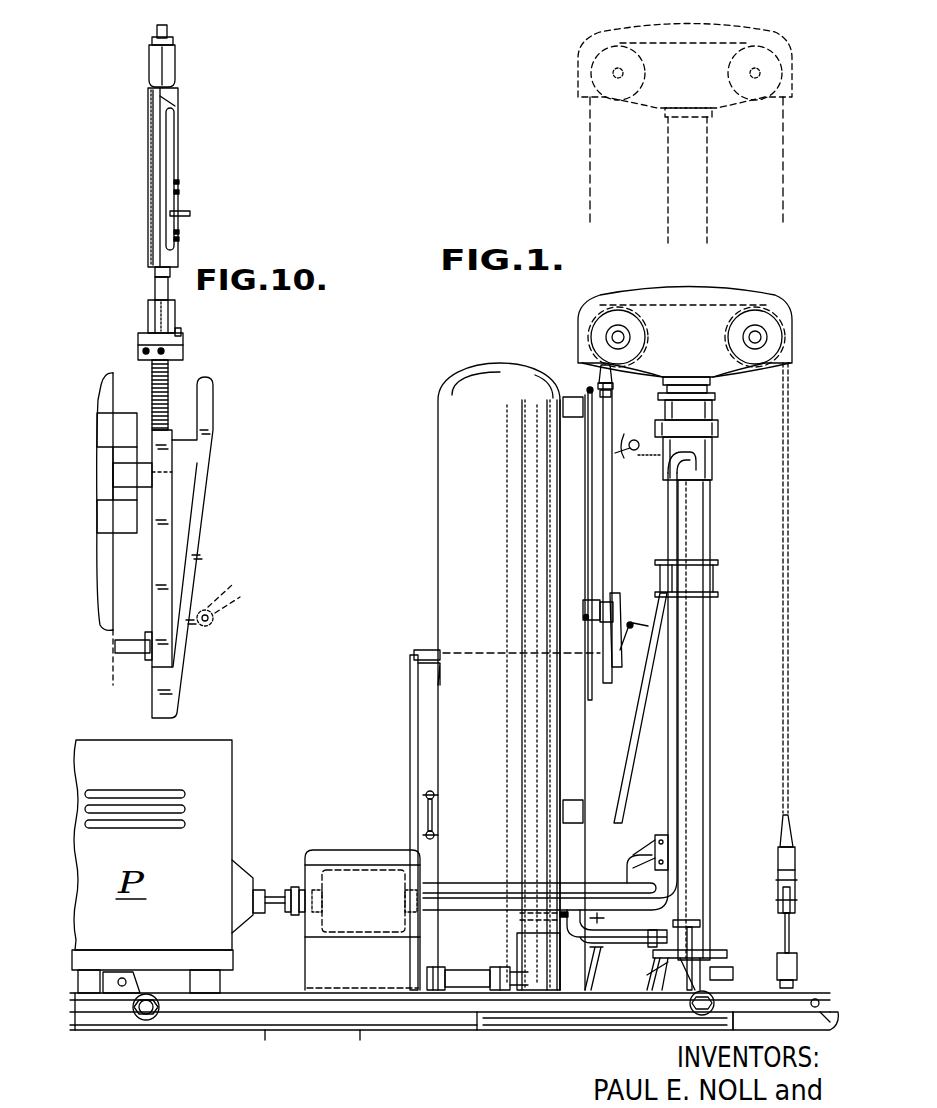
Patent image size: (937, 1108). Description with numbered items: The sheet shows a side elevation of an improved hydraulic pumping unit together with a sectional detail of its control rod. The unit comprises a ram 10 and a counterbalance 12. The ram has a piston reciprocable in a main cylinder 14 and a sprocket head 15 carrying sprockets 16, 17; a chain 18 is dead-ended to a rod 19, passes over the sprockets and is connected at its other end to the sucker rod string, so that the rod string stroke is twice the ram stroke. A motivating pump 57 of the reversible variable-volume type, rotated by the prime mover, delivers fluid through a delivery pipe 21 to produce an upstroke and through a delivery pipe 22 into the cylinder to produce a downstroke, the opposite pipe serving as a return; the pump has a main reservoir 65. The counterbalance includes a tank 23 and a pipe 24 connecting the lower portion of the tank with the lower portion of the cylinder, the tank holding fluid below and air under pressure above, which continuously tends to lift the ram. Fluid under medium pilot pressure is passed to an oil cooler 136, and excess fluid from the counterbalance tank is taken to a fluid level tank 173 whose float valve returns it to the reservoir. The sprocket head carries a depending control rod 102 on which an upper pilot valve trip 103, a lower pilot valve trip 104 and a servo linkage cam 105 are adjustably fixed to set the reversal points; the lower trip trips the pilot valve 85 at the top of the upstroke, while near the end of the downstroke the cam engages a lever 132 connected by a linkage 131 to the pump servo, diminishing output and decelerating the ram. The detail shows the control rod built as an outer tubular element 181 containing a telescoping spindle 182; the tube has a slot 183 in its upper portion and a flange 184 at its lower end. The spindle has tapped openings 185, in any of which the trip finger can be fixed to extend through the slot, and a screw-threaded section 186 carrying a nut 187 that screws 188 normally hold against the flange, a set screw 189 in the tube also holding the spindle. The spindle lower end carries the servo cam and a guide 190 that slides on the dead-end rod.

In FIG. 1, the ram 10 is at (708, 155).
In FIG. 1, the counterbalance 12 is at (430, 543).
In FIG. 1, the main cylinder 14 is at (704, 732).
In FIG. 1, the sprocket head 15 is at (700, 89).
In FIG. 1, the sprocket 16 is at (615, 314).
In FIG. 1, the sprocket 17 is at (760, 314).
In FIG. 1, the chain 18 is at (790, 541).
In FIG. 1, the rod 19 is at (588, 388).
In FIG. 1, the delivery pipe 21 is at (693, 941).
In FIG. 1, the delivery pipe 22 is at (680, 541).
In FIG. 1, the tank 23 is at (498, 609).
In FIG. 1, the pipe 24 is at (603, 1000).
In FIG. 1, the motivating pump 57 is at (350, 870).
In FIG. 1, the main reservoir 65 is at (373, 1014).
In FIG. 1, the pilot valve 85 is at (632, 452).
In FIG. 10, the control rod 102 is at (145, 188).
In FIG. 1, the control rod 102 is at (608, 508).
In FIG. 10, the upper pilot valve trip 103 is at (191, 212).
In FIG. 1, the upper pilot valve trip 103 is at (614, 406).
In FIG. 1, the lower pilot valve trip 104 is at (620, 559).
In FIG. 10, the servo linkage cam 105 is at (213, 474).
In FIG. 1, the servo linkage cam 105 is at (616, 600).
In FIG. 1, the linkage 131 is at (410, 729).
In FIG. 10, the lever 132 is at (212, 627).
In FIG. 1, the lever 132 is at (619, 652).
In FIG. 1, the oil cooler 136 is at (462, 1000).
In FIG. 1, the fluid level tank 173 is at (540, 1002).
In FIG. 10, the outer tubular element 181 is at (150, 97).
In FIG. 10, the telescoping spindle 182 is at (155, 284).
In FIG. 10, the slot 183 is at (175, 145).
In FIG. 10, the flange 184 is at (183, 340).
In FIG. 10, the tapped openings 185 is at (179, 192).
In FIG. 10, the screw-threaded section 186 is at (170, 366).
In FIG. 10, the nut 187 is at (138, 352).
In FIG. 10, the screws 188 is at (152, 333).
In FIG. 10, the set screw 189 is at (179, 337).
In FIG. 10, the guide 190 is at (105, 530).
In FIG. 1, the guide 190 is at (585, 618).